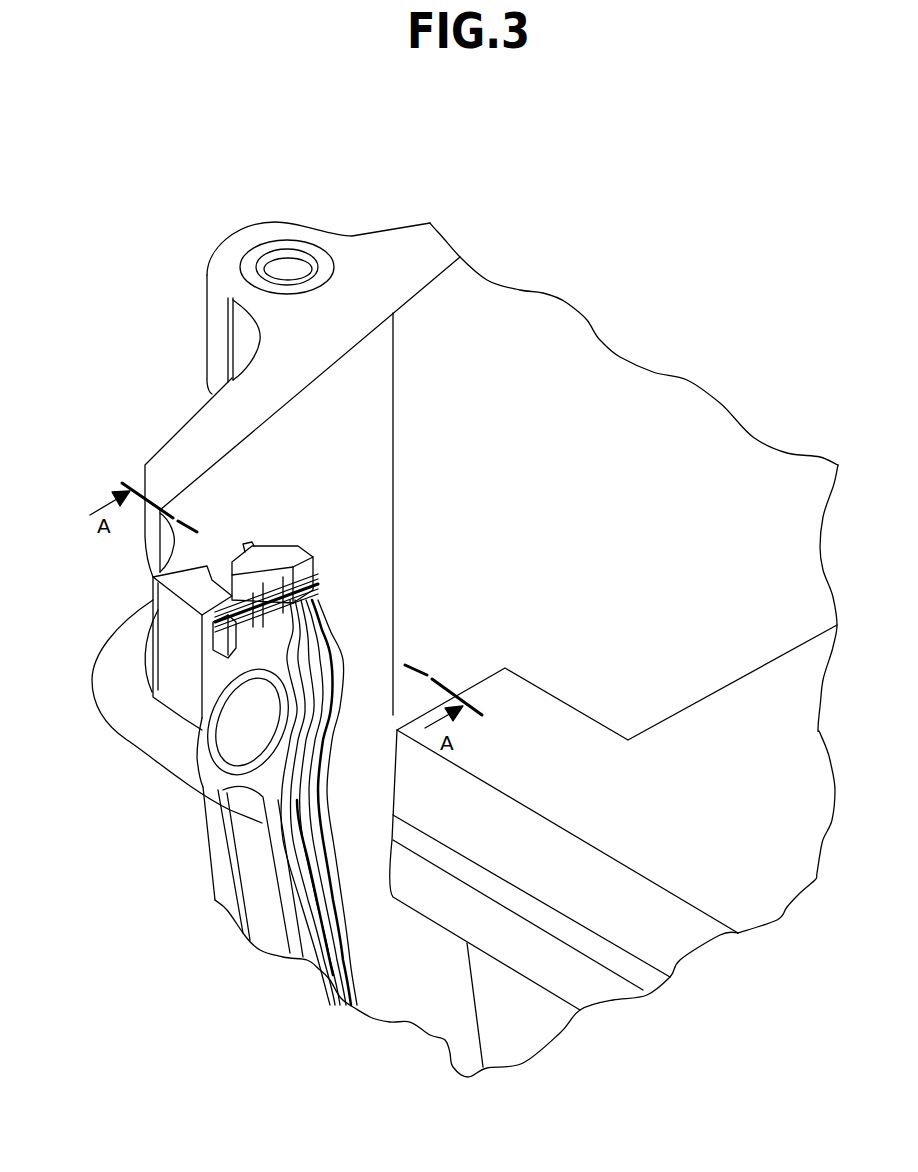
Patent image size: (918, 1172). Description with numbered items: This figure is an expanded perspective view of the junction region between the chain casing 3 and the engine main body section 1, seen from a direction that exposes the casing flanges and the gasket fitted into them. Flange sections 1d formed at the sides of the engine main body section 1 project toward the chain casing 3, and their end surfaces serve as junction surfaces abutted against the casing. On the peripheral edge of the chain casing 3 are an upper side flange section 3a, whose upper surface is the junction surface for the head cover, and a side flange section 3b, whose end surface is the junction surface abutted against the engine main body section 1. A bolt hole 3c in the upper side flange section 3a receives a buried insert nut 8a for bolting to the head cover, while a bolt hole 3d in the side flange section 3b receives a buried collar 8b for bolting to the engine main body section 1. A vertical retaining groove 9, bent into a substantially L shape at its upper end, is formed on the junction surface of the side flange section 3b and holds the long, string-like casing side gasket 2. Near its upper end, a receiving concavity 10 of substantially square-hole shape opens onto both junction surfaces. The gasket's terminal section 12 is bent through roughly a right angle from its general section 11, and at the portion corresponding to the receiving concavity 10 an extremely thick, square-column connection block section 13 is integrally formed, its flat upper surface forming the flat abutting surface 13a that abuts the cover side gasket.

The engine main body section 1 is at (705, 688).
The flange section 1d is at (473, 1040).
The casing side gasket 2 is at (350, 655).
The chain casing 3 is at (276, 591).
The upper side flange section 3a is at (213, 418).
The side flange section 3b is at (260, 915).
The bolt hole 3c is at (282, 268).
The bolt hole 3d is at (232, 731).
The insert nut 8a is at (310, 245).
The collar 8b is at (213, 742).
The retaining groove 9 is at (218, 652).
The receiving concavity 10 is at (153, 577).
The general section 11 is at (323, 867).
The terminal section 12 is at (247, 642).
The connection block section 13 is at (285, 552).
The flat abutting surface 13a is at (253, 562).